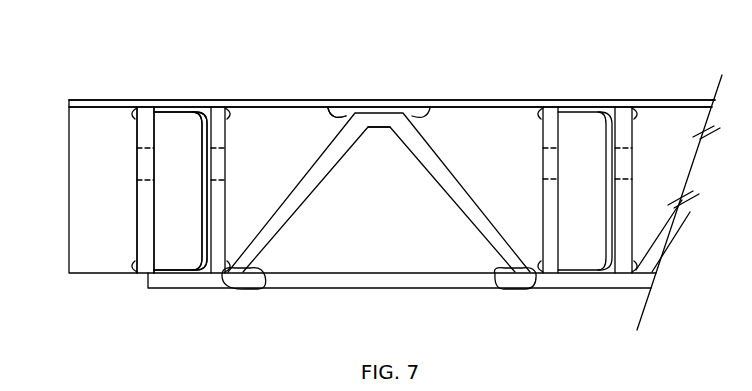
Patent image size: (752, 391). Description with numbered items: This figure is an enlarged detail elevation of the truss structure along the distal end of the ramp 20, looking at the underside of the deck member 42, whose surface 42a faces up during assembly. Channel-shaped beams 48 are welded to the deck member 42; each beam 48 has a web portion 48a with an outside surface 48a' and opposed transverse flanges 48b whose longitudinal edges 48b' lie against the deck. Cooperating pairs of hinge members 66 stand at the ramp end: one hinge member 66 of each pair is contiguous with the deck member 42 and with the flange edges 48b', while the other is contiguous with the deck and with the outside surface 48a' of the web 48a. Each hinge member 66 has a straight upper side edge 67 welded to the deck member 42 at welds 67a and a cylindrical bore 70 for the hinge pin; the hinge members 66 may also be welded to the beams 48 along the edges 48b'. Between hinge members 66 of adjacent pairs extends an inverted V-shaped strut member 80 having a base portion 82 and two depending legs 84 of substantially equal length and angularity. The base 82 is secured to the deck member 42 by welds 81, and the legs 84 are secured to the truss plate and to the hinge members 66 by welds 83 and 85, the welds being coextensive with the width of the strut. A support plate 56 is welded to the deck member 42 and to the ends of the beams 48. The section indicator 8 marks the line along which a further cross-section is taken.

The section line 8- 8 is at (385, 85).
The ramp 20 is at (662, 94).
The deck member 42 is at (447, 104).
The deck member surface 42a is at (505, 108).
The beam 48 is at (197, 111).
The web portion 48a is at (180, 191).
The outside surface of web 48a' is at (238, 191).
The transverse flange 48b is at (160, 198).
The longitudinal edge of beam flange 48b' is at (101, 180).
The support plate 56 is at (69, 128).
The hinge member 66 is at (541, 128).
The upper side edge 67 is at (218, 108).
The weld 67a is at (133, 113).
The cylindrical bore 70 is at (140, 152).
The strut member 80 is at (318, 128).
The weld 81 is at (438, 105).
The base portion 82 is at (385, 128).
The weld 83 is at (250, 290).
The leg 84 is at (292, 207).
The weld 85 is at (222, 278).